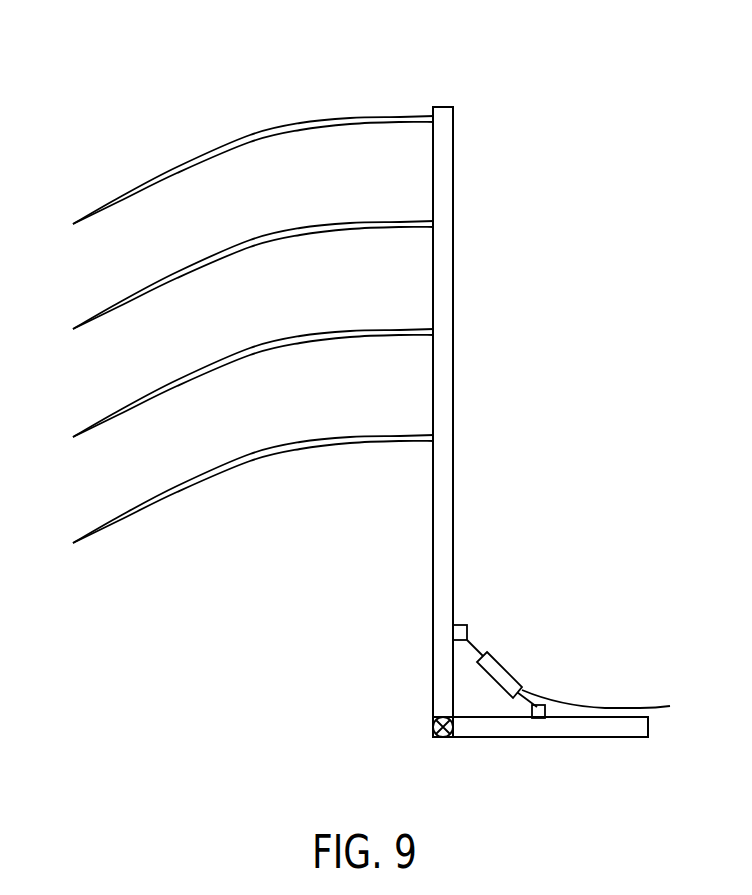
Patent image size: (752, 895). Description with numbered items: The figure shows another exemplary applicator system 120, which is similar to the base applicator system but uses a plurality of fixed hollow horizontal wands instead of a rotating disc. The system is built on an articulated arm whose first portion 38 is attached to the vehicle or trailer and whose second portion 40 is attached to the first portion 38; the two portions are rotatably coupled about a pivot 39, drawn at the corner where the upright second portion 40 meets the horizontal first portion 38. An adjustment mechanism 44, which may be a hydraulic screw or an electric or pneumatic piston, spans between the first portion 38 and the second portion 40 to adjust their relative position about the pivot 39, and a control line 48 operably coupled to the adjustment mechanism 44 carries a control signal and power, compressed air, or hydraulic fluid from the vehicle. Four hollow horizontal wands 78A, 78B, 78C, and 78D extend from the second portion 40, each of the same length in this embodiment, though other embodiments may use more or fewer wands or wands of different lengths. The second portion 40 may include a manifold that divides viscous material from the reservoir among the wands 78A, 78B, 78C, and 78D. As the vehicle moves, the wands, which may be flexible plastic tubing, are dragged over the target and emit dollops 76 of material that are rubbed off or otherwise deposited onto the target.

The applicator system 120 is at (633, 73).
The second portion 40 is at (453, 382).
The first portion 38 is at (577, 738).
The pivot 39 is at (433, 727).
The adjustment mechanism 44 is at (510, 663).
The control line 48 is at (662, 704).
The hollow horizontal wand 78A is at (253, 169).
The hollow horizontal wand 78B is at (253, 274).
The hollow horizontal wand 78C is at (253, 382).
The hollow horizontal wand 78D is at (253, 488).
The dollops 76 is at (51, 427).